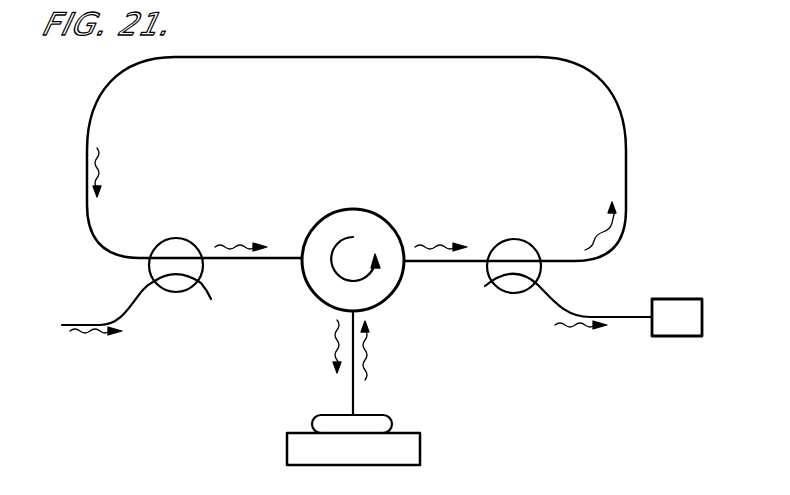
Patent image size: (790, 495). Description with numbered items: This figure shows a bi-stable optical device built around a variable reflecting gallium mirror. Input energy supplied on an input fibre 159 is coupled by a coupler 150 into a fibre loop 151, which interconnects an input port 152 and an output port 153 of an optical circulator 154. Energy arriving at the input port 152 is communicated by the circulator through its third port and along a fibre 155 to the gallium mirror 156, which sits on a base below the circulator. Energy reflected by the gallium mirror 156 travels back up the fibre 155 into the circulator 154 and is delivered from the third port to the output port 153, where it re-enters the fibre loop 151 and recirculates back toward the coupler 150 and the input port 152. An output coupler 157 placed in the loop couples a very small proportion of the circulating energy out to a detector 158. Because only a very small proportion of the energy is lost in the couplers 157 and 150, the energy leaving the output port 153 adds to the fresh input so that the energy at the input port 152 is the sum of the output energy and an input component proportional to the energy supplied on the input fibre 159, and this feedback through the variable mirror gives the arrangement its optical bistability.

The coupler 150 is at (156, 250).
The fibre loop 151 is at (325, 57).
The input port 152 is at (300, 262).
The output port 153 is at (410, 263).
The optical circulator 154 is at (357, 209).
The fibre 155 is at (352, 388).
The gallium mirror 156 is at (392, 418).
The output coupler 157 is at (512, 287).
The detector 158 is at (668, 298).
The input fibre 159 is at (100, 322).